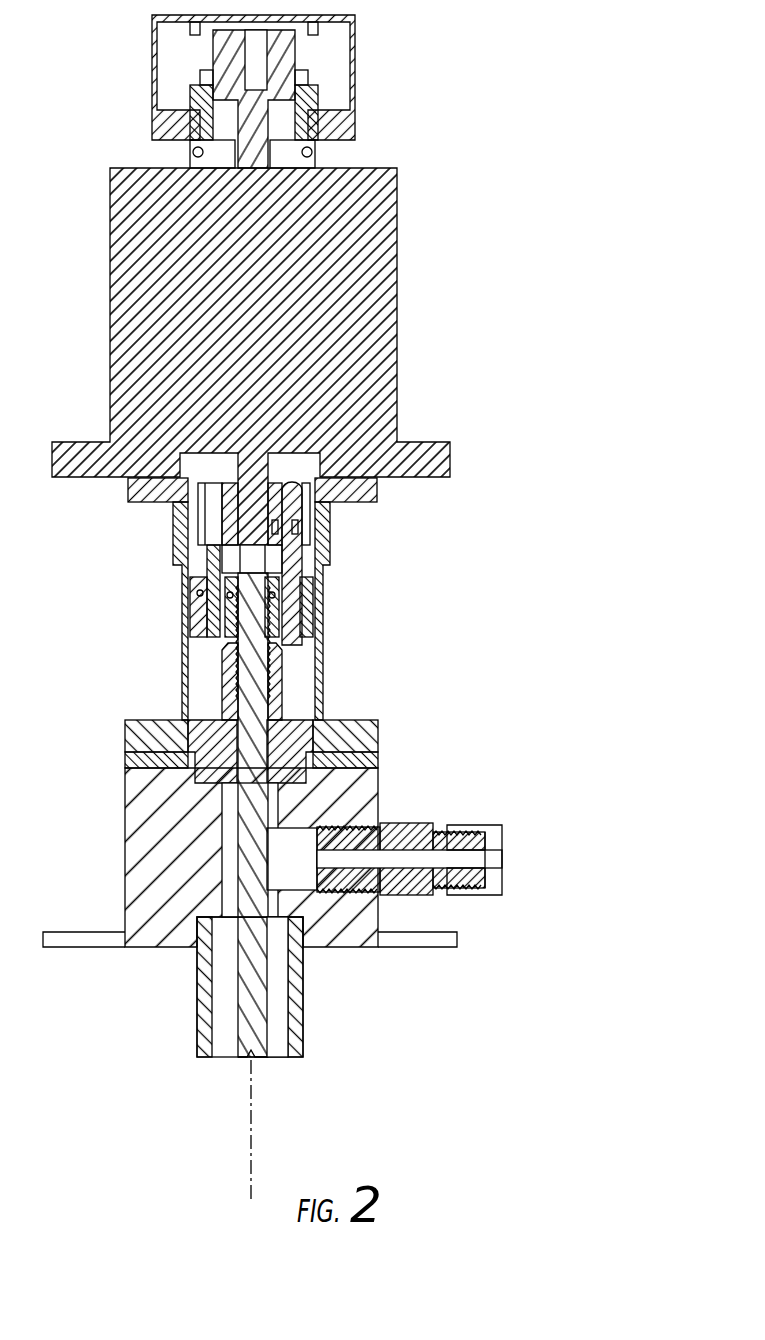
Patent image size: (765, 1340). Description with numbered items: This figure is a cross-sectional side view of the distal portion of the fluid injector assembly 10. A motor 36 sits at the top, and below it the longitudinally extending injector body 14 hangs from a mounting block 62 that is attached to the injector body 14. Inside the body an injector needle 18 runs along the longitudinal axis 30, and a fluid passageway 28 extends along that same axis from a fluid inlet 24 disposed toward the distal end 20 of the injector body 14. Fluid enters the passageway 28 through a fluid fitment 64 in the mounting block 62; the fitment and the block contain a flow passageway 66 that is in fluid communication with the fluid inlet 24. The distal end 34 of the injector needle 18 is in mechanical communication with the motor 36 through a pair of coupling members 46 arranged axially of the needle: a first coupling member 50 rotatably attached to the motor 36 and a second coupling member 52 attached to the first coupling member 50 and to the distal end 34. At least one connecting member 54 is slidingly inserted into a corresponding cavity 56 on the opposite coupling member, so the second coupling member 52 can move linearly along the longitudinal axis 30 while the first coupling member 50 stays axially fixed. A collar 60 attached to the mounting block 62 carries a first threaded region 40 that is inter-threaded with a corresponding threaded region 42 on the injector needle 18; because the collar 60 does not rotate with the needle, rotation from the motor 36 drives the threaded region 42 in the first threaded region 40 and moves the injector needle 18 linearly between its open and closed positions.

The fluid injector assembly 10 is at (526, 373).
The injector body 14 is at (303, 1030).
The injector needle 18 is at (258, 742).
The distal end 20 is at (197, 970).
The fluid inlet 24 is at (280, 925).
The fluid passageway 28 is at (278, 1018).
The longitudinal axis 30 is at (251, 1112).
The distal end 34 is at (217, 640).
The motor 36 is at (398, 287).
The first threaded region 40 is at (283, 694).
The threaded region 42 is at (272, 660).
The pair of coupling members 46 is at (305, 615).
The first coupling member 50 is at (207, 525).
The second coupling member 52 is at (193, 615).
The connecting member 54 is at (290, 493).
The cavity 56 is at (308, 555).
The collar 60 is at (375, 760).
The mounting block 62 is at (124, 853).
The fluid fitment 64 is at (412, 828).
The flow passageway 66 is at (487, 860).